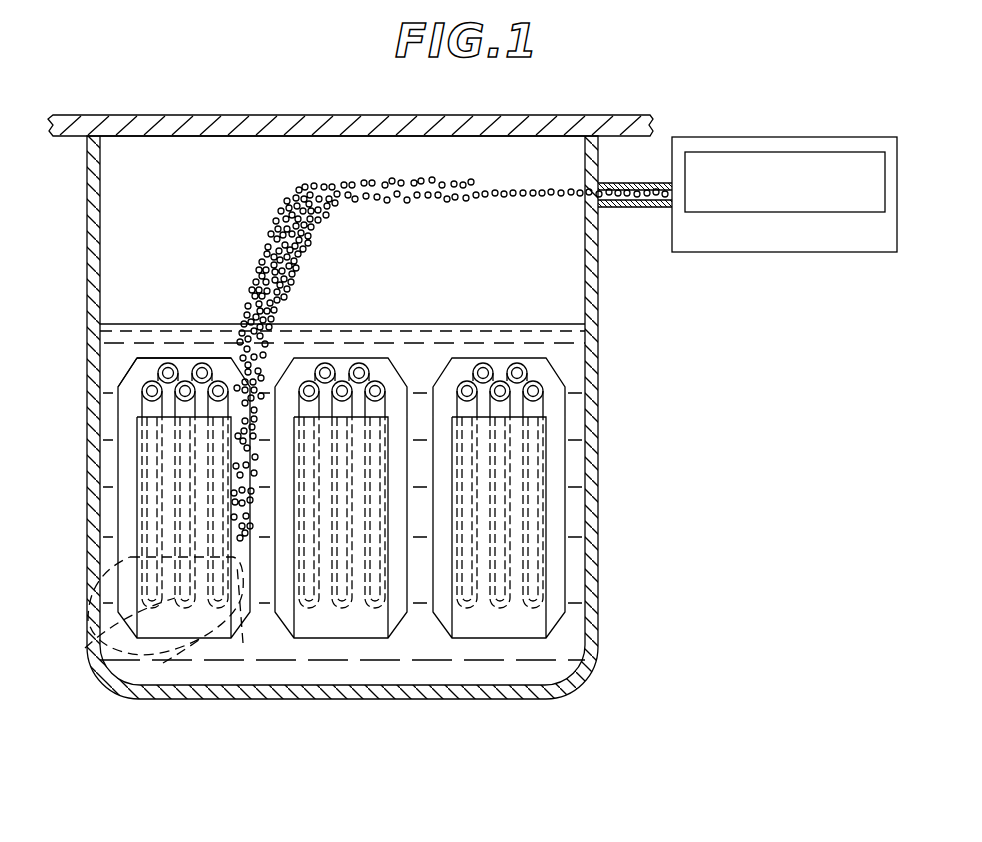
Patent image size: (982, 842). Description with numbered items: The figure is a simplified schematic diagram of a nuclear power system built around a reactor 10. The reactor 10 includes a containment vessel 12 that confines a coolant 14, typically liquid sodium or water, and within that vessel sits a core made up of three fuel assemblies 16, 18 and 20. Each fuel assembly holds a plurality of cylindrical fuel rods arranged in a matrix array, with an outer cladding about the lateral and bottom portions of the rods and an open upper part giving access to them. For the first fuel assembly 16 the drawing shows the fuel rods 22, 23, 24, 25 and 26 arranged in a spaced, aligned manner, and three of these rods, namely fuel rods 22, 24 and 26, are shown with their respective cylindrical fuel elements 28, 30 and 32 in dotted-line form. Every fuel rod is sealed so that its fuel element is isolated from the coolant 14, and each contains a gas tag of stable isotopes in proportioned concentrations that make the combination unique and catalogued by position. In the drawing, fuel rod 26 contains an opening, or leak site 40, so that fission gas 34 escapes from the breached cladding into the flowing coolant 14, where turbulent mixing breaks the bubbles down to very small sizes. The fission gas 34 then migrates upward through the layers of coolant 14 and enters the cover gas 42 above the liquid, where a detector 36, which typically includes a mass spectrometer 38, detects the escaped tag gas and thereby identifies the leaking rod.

The reactor 10 is at (640, 398).
The containment vessel 12 is at (600, 487).
The coolant 14 is at (565, 343).
The first fuel assembly 16 is at (142, 453).
The fuel assembly 18 is at (390, 620).
The fuel assembly 20 is at (557, 560).
The fuel rod 22 is at (143, 377).
The fuel rod 23 is at (153, 367).
The fuel rod 24 is at (191, 379).
The fuel rod 25 is at (205, 362).
The fuel rod 26 is at (228, 380).
The fuel element 28 is at (88, 575).
The fuel element 30 is at (85, 648).
The fuel element 32 is at (163, 663).
The fission gas 34 is at (315, 173).
The detector 36 is at (880, 246).
The mass spectrometer 38 is at (862, 181).
The leak site 40 is at (243, 643).
The cover gas 42 is at (120, 182).